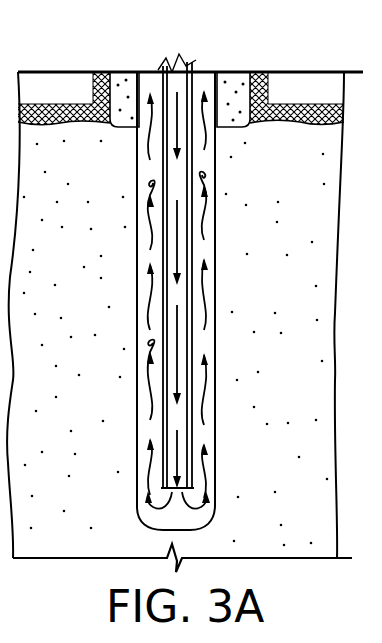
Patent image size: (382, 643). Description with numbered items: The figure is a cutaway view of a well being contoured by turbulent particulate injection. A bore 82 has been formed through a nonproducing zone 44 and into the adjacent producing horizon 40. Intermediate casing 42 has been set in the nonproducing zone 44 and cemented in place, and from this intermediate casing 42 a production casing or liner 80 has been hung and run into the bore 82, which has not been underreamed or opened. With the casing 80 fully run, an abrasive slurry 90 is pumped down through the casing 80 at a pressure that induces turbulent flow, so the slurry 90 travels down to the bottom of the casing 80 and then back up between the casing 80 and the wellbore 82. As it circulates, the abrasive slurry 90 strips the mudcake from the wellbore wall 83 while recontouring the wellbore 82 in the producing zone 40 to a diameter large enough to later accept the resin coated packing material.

The producing horizon 40 is at (328, 231).
The intermediate casing 42 is at (222, 75).
The nonproducing zone 44 is at (302, 85).
The production casing 80 is at (193, 479).
The bore 82 is at (208, 273).
The wellbore wall 83 is at (210, 344).
The abrasive slurry 90 is at (157, 70).